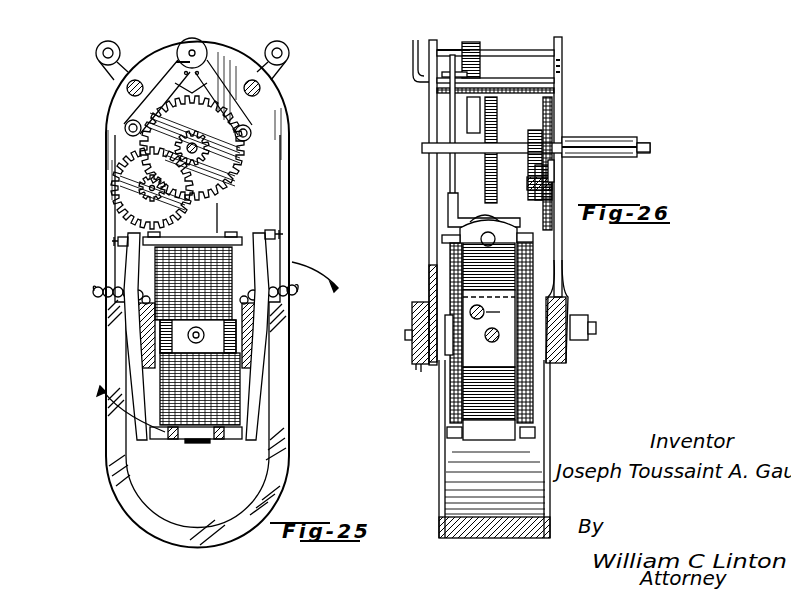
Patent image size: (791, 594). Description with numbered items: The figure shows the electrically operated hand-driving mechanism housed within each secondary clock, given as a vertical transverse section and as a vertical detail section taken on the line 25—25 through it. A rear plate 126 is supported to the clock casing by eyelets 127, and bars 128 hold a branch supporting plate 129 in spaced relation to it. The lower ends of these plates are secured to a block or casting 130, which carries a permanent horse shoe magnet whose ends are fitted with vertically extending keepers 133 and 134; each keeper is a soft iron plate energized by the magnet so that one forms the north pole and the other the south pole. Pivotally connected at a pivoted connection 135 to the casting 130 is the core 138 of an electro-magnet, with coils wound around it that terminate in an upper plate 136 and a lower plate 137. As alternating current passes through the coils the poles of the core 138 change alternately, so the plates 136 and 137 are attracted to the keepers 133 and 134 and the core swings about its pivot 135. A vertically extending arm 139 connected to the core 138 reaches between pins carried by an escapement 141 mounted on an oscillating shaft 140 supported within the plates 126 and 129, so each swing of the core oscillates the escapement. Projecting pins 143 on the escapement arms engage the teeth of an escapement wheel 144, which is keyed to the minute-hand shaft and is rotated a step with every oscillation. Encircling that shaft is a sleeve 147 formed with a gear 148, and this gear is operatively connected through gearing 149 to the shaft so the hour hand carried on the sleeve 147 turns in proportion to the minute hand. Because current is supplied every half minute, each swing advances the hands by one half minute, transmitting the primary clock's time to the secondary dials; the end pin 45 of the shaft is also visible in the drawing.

In FIG. 26, the section line 25- 25 is at (552, 37).
In FIG. 26, the shaft end pin 45 is at (647, 149).
In FIG. 26, the rear plate 126 is at (428, 180).
In FIG. 25, the eyelets 127 is at (110, 42).
In FIG. 25, the bars 128 is at (260, 85).
In FIG. 26, the bars 128 is at (533, 88).
In FIG. 26, the branch supporting plate 129 is at (560, 131).
In FIG. 26, the block or casting 130 is at (414, 327).
In FIG. 25, the keeper 133 is at (263, 258).
In FIG. 25, the keeper 134 is at (130, 273).
In FIG. 26, the keeper 134 is at (507, 432).
In FIG. 26, the pivoted connection 135 is at (412, 305).
In FIG. 25, the upper plate 136 is at (218, 213).
In FIG. 26, the upper plate 136 is at (533, 237).
In FIG. 25, the lower plate 137 is at (232, 440).
In FIG. 26, the lower plate 137 is at (535, 430).
In FIG. 25, the core 138 is at (210, 393).
In FIG. 26, the core 138 is at (530, 392).
In FIG. 26, the vertically extending arm 139 is at (450, 127).
In FIG. 25, the oscillating shaft 140 is at (213, 36).
In FIG. 26, the oscillating shaft 140 is at (450, 50).
In FIG. 25, the escapement 141 is at (213, 63).
In FIG. 26, the escapement 141 is at (483, 72).
In FIG. 25, the projecting pins 143 is at (240, 136).
In FIG. 26, the projecting pins 143 is at (487, 120).
In FIG. 25, the escapement wheel 144 is at (145, 140).
In FIG. 26, the escapement wheel 144 is at (552, 182).
In FIG. 26, the sleeve 147 is at (617, 140).
In FIG. 26, the gear 148 is at (552, 172).
In FIG. 25, the gearing 149 is at (123, 200).
In FIG. 26, the gearing 149 is at (538, 127).